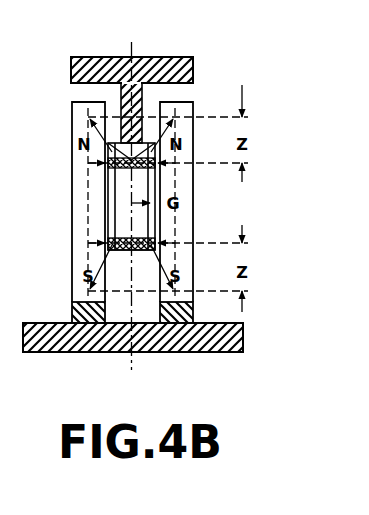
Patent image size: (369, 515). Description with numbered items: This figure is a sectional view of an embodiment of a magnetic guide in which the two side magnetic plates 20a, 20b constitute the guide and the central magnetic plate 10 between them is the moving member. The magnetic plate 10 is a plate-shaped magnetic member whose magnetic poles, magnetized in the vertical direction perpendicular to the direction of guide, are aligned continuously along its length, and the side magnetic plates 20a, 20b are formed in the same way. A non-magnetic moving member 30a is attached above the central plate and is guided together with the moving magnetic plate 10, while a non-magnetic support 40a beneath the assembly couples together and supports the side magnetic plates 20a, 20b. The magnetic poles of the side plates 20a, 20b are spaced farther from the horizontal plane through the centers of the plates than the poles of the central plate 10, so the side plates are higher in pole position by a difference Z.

The non-magnetic moving member 30a is at (170, 57).
The magnetic plate 10 is at (116, 196).
The magnetic plate 20a is at (77, 202).
The magnetic plate 20b is at (193, 186).
The non-magnetic support 40a is at (193, 352).